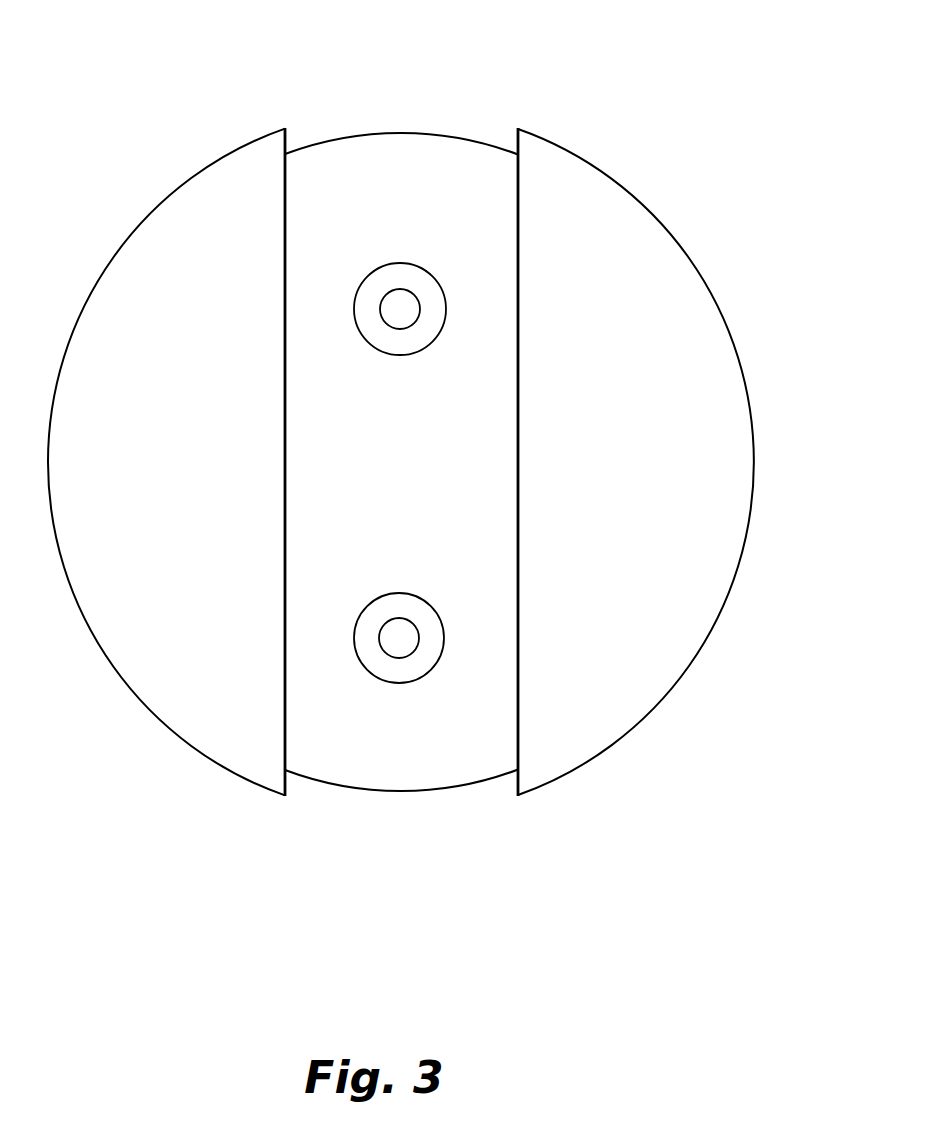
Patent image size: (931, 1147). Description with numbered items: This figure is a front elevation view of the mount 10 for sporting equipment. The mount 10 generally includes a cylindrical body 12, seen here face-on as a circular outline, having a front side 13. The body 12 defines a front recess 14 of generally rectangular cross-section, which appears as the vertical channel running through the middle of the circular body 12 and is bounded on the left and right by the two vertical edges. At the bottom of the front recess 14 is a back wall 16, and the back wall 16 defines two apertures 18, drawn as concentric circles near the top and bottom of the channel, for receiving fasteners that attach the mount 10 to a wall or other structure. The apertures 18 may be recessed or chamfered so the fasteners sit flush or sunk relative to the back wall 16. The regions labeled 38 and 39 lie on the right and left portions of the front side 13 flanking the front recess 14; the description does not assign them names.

The mount 10 is at (655, 143).
The cylindrical body 12 is at (648, 378).
The front side 13 is at (156, 542).
The front recess 14 is at (345, 123).
The back wall 16 is at (381, 480).
The apertures 18 is at (400, 303).
The right side portion 38 is at (598, 498).
The left side portion 39 is at (161, 425).